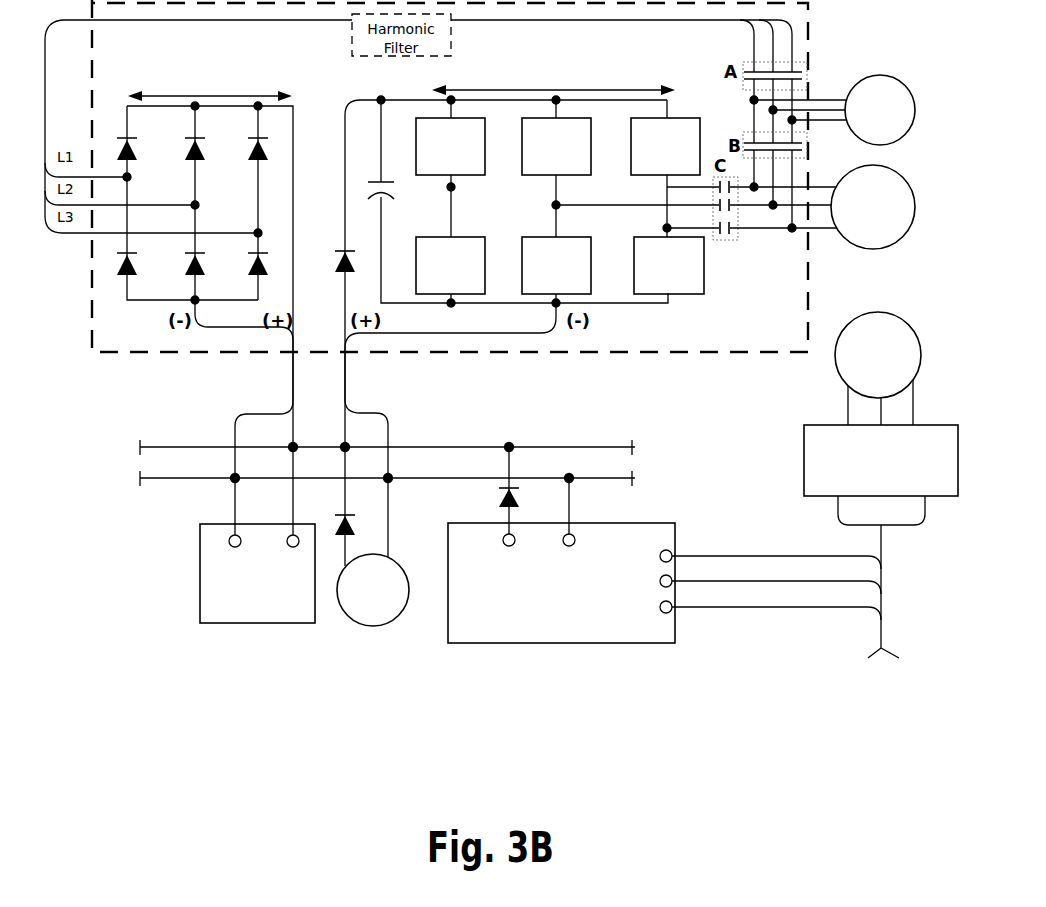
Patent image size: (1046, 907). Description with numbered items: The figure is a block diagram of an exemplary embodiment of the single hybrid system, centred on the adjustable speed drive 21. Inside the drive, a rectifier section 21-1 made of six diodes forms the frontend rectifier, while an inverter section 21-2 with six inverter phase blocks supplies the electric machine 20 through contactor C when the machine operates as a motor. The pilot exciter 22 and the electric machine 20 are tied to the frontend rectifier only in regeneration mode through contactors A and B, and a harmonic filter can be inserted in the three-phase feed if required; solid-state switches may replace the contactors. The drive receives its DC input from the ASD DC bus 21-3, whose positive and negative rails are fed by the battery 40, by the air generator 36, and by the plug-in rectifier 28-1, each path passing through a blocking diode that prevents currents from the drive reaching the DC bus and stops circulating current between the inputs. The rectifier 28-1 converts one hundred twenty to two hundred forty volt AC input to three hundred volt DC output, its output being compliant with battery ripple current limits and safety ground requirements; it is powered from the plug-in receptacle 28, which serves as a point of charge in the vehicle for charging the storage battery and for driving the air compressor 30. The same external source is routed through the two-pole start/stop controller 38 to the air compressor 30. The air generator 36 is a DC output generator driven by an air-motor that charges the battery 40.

The electric machine 20 is at (735, 207).
The adjustable speed drive 21 is at (450, 176).
The rectifier section 21-1 is at (205, 260).
The inverter section 21-2 is at (519, 257).
The ASD DC bus 21-3 is at (412, 452).
The pilot exciter 22 is at (832, 110).
The plug-in receptacle 28 is at (788, 619).
The rectifier charger 28-1 is at (561, 545).
The air compressor 30 is at (879, 368).
The DC generator 36 is at (372, 536).
The controller 38 is at (881, 478).
The battery 40 is at (257, 535).